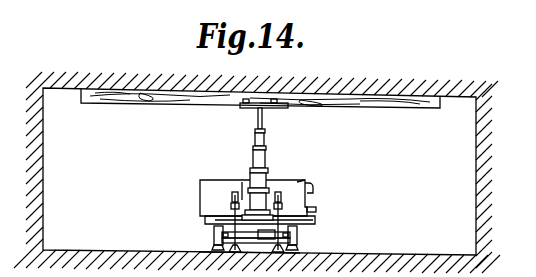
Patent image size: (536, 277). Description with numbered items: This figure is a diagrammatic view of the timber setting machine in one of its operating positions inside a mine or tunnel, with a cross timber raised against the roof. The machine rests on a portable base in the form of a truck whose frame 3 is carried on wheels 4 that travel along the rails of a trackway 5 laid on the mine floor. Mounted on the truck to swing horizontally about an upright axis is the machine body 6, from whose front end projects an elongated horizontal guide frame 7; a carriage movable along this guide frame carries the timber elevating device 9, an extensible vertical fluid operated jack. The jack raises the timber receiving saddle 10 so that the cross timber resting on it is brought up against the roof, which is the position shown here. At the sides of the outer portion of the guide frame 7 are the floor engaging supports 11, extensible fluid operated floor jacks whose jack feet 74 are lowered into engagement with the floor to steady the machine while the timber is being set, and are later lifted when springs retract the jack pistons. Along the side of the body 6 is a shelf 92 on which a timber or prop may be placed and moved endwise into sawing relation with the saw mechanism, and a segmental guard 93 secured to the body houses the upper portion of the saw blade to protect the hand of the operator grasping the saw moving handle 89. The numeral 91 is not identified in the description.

The frame 3 is at (315, 217).
The wheels 4 is at (298, 235).
The trackway 5 is at (215, 247).
The machine body 6 is at (216, 186).
The guide frame 7 is at (242, 182).
The timber elevating device 9 is at (266, 180).
The timber receiving saddle 10 is at (283, 108).
The floor engaging supports 11 is at (281, 199).
The jack feet 74 is at (297, 250).
The saw moving handle 89 is at (302, 177).
The floor rail 91 is at (240, 253).
The shelf 92 is at (313, 207).
The segmental guard 93 is at (313, 190).